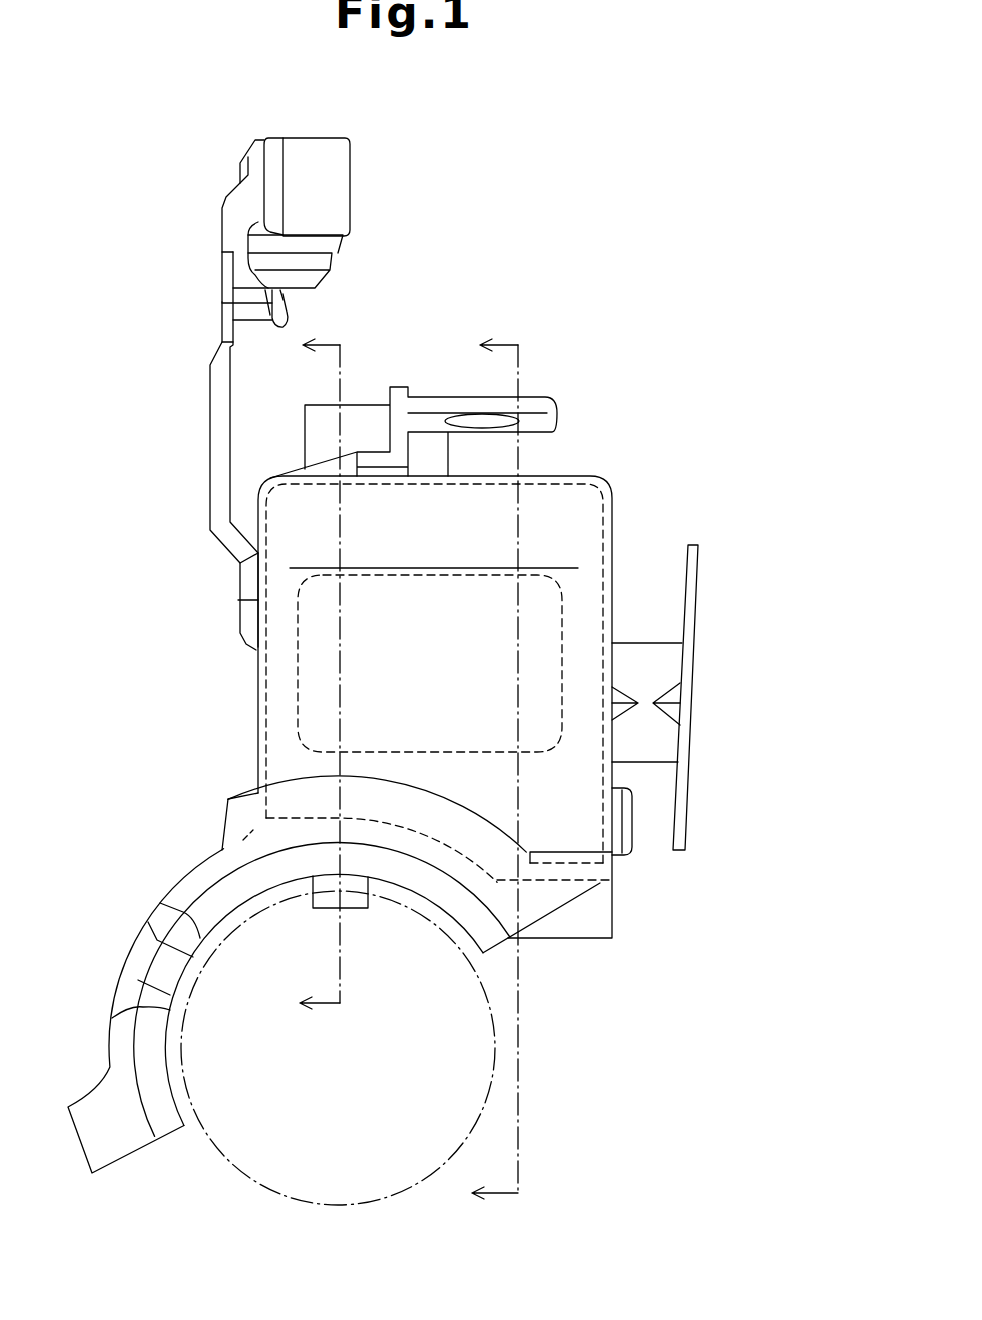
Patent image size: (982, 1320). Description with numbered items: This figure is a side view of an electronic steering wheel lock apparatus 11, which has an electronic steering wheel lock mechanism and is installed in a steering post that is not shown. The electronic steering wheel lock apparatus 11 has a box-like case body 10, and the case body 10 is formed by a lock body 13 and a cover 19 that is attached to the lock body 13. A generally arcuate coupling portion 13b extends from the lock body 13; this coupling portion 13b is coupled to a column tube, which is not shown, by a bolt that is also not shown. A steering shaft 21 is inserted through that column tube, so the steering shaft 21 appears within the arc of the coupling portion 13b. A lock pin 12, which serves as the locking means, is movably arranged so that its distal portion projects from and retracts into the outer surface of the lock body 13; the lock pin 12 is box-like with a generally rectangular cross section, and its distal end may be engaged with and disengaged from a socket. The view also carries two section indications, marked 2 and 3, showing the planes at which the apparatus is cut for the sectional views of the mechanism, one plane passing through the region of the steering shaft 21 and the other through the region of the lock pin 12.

The section line 2- 2 is at (495, 770).
The section line 3- 3 is at (320, 672).
The case body 10 is at (258, 720).
The electronic steering wheel lock apparatus 11 is at (627, 240).
The lock pin 12 is at (363, 908).
The lock body 13 is at (560, 905).
The coupling portion 13b is at (195, 876).
The cover 19 is at (607, 484).
The steering shaft 21 is at (393, 1195).